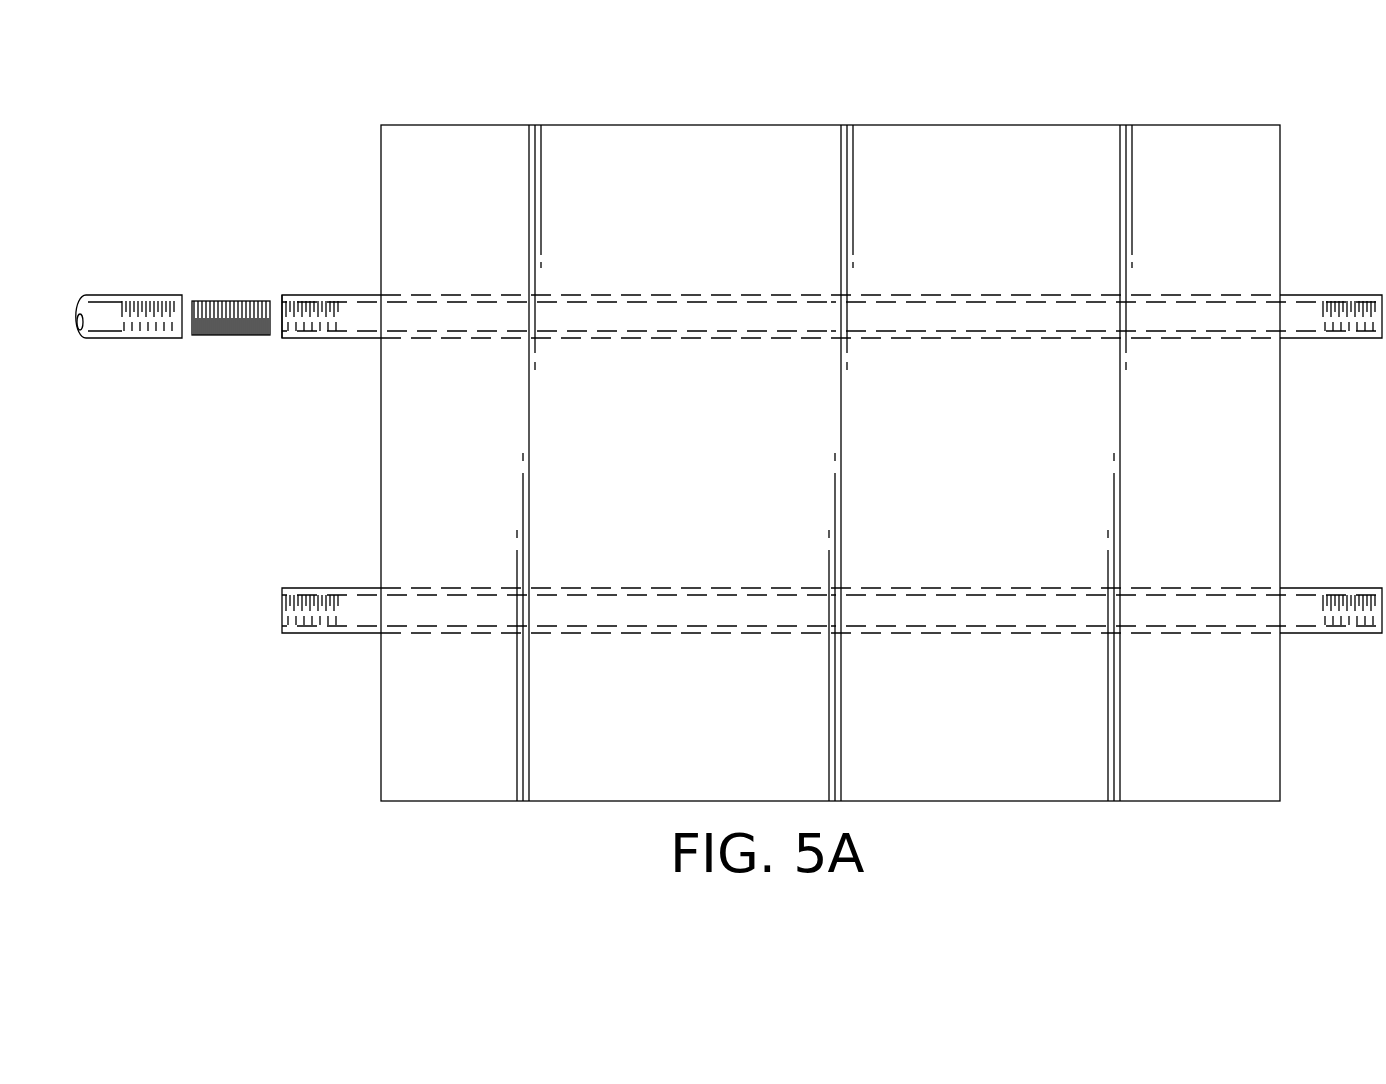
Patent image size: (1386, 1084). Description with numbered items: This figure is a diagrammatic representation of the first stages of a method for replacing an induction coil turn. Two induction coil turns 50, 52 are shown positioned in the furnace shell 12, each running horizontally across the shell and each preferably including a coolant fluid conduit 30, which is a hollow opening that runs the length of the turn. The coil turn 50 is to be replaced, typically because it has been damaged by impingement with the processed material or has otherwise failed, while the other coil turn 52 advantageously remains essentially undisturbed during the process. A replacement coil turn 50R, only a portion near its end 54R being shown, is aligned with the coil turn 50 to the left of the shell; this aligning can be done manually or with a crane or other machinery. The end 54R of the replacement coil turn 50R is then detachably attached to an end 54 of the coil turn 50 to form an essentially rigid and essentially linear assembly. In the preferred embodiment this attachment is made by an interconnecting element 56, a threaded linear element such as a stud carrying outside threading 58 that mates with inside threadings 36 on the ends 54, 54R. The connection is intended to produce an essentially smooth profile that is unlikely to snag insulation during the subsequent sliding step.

The furnace shell 12 is at (697, 202).
The coolant fluid conduit 30 is at (1016, 332).
The inside threadings 36 is at (138, 298).
The coil turn 50 is at (748, 340).
The coil turn 52 is at (738, 640).
The end 54 is at (306, 346).
The end 54R is at (157, 346).
The replacement coil turn 50R is at (92, 346).
The interconnecting element 56 is at (205, 300).
The outside threading 58 is at (247, 300).